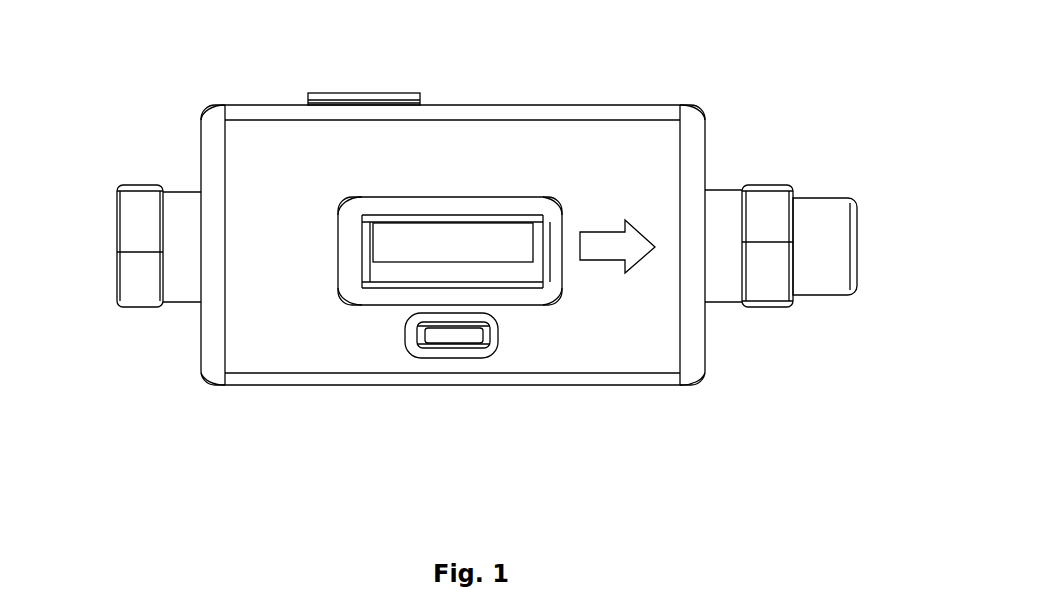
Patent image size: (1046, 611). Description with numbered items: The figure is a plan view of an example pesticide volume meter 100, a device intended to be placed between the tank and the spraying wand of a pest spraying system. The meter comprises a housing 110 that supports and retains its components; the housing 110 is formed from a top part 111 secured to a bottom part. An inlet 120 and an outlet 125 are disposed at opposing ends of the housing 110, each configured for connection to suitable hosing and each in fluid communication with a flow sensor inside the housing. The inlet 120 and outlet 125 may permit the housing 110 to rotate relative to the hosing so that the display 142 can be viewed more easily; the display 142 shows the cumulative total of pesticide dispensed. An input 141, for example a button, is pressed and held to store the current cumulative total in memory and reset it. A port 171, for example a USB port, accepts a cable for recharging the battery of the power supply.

The pesticide volume meter 100 is at (718, 56).
The housing 110 is at (586, 106).
The top part 111 is at (580, 327).
The inlet 120 is at (118, 293).
The outlet 125 is at (828, 197).
The input 141 is at (447, 347).
The display 142 is at (390, 244).
The port 171 is at (368, 91).